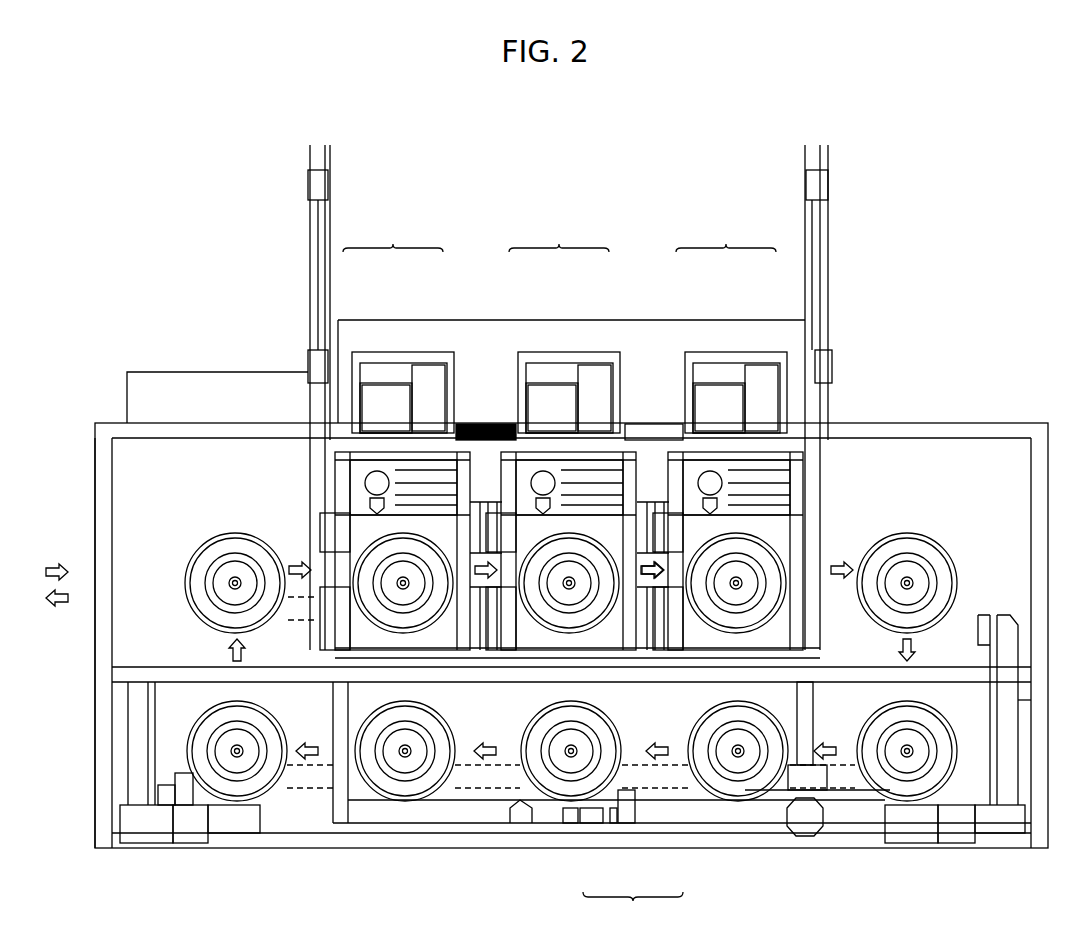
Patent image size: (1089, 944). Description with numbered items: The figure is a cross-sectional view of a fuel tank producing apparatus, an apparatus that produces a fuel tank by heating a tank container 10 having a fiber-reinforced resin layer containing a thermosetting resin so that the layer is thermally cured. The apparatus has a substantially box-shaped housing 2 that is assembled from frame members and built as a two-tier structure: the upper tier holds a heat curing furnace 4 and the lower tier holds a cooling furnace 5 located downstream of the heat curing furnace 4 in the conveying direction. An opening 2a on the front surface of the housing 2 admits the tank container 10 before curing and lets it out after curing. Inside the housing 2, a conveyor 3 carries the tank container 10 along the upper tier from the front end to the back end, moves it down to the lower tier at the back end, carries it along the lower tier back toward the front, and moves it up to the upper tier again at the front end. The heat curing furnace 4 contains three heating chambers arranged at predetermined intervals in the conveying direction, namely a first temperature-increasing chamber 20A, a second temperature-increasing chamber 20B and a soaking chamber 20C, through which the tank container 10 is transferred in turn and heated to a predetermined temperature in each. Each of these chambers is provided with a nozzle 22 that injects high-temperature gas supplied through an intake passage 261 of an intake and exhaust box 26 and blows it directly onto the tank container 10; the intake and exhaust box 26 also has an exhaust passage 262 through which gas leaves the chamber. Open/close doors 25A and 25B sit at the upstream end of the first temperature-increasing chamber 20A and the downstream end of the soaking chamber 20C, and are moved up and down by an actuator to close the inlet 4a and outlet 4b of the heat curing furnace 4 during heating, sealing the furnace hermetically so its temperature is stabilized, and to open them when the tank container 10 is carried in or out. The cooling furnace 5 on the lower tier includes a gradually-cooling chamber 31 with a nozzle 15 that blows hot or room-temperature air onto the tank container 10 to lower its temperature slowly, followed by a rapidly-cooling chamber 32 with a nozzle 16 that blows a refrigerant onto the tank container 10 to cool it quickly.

The housing 2 is at (93, 422).
The opening 2a is at (95, 513).
The conveyor 3 is at (838, 608).
The heat curing furnace 4 is at (632, 430).
The inlet 4a is at (312, 545).
The outlet 4b is at (828, 550).
The cooling furnace 5 is at (682, 862).
The tank container 10 is at (190, 570).
The nozzle 15 is at (806, 825).
The nozzle 16 is at (528, 803).
The first temperature-increasing chamber 20A is at (450, 433).
The second temperature-increasing chamber 20B is at (616, 433).
The soaking chamber 20C is at (850, 433).
The nozzle 22 is at (520, 423).
The open/close door 25A is at (312, 530).
The open/close door 25B is at (828, 530).
The intake and exhaust box 26 is at (559, 238).
The intake passage 261 is at (375, 395).
The exhaust passage 262 is at (423, 380).
The gradually-cooling chamber 31 is at (687, 813).
The rapidly-cooling chamber 32 is at (590, 817).